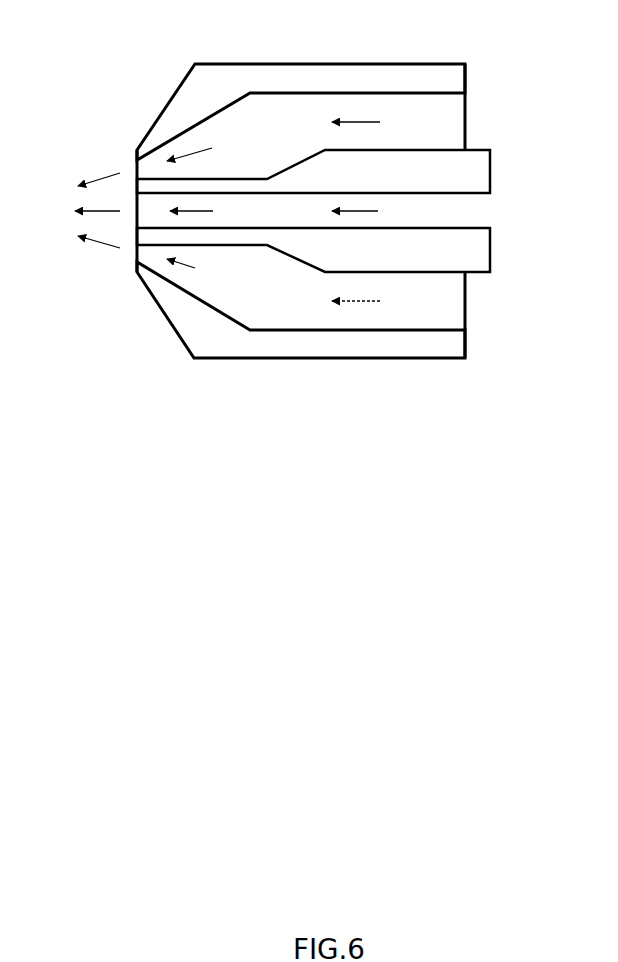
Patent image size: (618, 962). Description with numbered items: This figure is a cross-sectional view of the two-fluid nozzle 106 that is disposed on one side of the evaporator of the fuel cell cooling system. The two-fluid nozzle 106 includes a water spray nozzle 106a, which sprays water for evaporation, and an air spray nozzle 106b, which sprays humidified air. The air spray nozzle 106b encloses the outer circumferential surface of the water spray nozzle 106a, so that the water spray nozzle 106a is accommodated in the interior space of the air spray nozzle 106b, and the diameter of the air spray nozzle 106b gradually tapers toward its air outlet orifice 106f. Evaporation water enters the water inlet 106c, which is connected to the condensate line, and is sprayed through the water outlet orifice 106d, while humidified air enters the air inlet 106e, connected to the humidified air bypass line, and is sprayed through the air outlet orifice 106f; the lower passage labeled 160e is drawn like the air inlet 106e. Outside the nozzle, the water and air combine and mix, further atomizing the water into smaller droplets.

The two-fluid nozzle 106 is at (133, 88).
The water spray nozzle 106a is at (480, 160).
The air spray nozzle 106b is at (330, 72).
The water inlet 106c is at (475, 219).
The water outlet orifice 106d is at (148, 206).
The air inlet 106e is at (453, 132).
The air outlet orifice 106f is at (152, 173).
The lower outer passage 160e is at (453, 310).